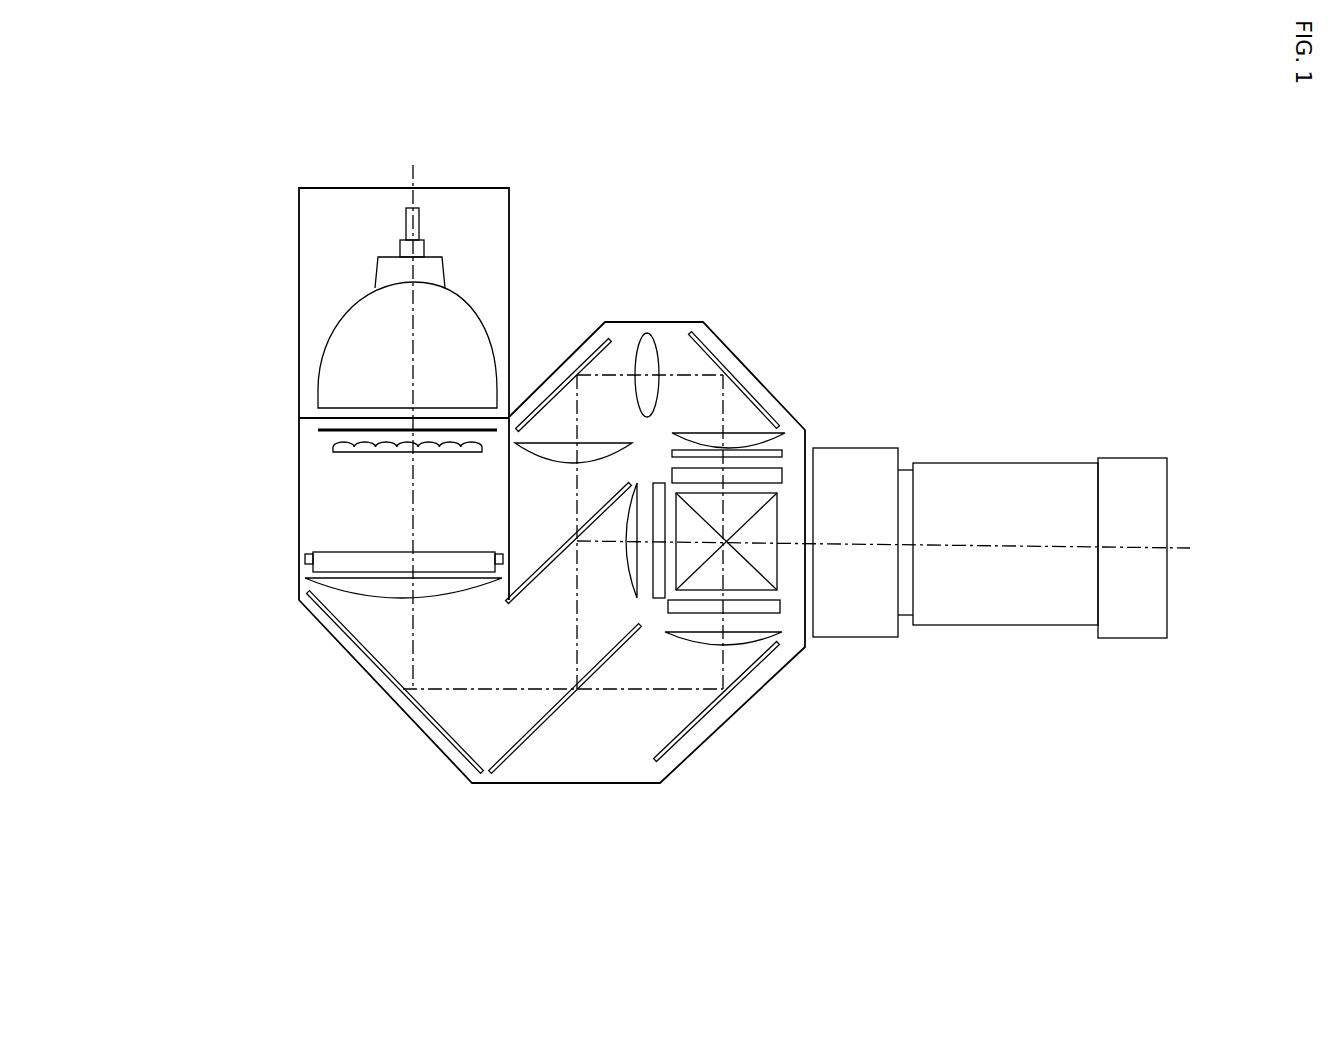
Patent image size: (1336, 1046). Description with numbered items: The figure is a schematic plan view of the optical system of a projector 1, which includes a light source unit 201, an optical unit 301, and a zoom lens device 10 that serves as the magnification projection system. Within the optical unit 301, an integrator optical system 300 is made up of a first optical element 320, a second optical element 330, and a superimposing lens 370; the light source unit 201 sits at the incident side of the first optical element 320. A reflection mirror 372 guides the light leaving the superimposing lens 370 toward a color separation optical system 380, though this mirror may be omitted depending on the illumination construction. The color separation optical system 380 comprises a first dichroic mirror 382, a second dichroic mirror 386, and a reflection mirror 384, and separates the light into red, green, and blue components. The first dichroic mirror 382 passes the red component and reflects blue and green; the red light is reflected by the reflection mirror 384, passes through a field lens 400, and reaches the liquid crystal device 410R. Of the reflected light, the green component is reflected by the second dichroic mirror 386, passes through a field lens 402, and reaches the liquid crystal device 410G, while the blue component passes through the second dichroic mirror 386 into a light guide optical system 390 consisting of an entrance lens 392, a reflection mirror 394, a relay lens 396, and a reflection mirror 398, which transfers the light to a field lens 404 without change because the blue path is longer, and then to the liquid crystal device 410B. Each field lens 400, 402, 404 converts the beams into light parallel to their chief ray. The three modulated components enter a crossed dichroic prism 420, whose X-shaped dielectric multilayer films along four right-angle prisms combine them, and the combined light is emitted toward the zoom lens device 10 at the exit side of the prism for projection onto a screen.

The projector 1 is at (1020, 318).
The zoom lens device 10 is at (1008, 451).
The light source unit 201 is at (284, 328).
The integrator optical system 300 is at (203, 503).
The optical unit 301 is at (615, 856).
The first optical element 320 is at (327, 449).
The second optical element 330 is at (305, 557).
The superimposing lens 370 is at (305, 581).
The reflection mirror 372 is at (305, 604).
The color separation optical system 380 is at (513, 664).
The first dichroic mirror 382 is at (495, 766).
The reflection mirror 384 is at (663, 762).
The second dichroic mirror 386 is at (543, 565).
The light guide optical system 390 is at (628, 329).
The entrance lens 392 is at (518, 462).
The reflection mirror 394 is at (598, 345).
The relay lens 396 is at (645, 335).
The reflection mirror 398 is at (715, 352).
The field lens 400 is at (777, 645).
The field lens 402 is at (625, 582).
The field lens 404 is at (680, 430).
The liquid crystal device 410B is at (777, 468).
The liquid crystal device 410G is at (658, 480).
The liquid crystal device 410R is at (758, 607).
The crossed dichroic prism 420 is at (770, 565).